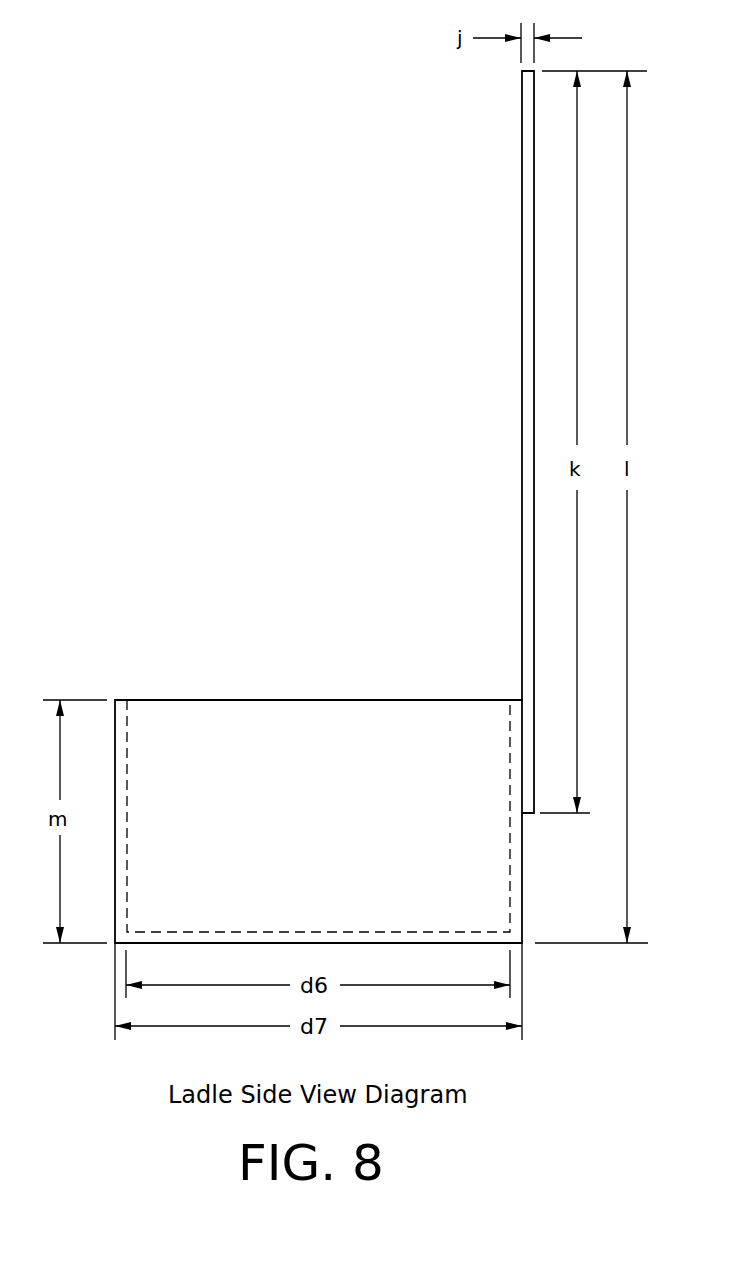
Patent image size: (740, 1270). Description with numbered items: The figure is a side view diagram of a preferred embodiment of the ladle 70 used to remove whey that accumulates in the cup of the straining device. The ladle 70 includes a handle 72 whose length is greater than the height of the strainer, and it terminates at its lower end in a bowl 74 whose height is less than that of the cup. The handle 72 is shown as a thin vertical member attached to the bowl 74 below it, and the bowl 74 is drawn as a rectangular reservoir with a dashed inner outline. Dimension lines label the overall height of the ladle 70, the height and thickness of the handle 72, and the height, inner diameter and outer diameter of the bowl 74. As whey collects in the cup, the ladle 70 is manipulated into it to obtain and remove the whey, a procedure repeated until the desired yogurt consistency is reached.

The ladle 70 is at (324, 507).
The handle 72 is at (521, 302).
The bowl 74 is at (302, 838).